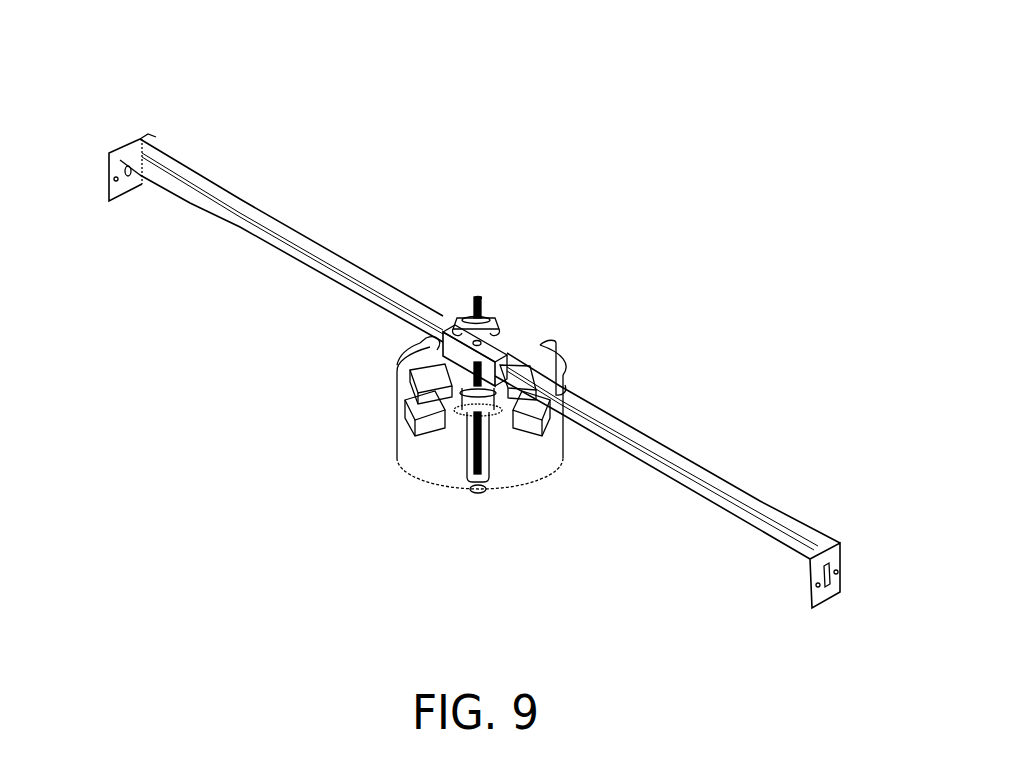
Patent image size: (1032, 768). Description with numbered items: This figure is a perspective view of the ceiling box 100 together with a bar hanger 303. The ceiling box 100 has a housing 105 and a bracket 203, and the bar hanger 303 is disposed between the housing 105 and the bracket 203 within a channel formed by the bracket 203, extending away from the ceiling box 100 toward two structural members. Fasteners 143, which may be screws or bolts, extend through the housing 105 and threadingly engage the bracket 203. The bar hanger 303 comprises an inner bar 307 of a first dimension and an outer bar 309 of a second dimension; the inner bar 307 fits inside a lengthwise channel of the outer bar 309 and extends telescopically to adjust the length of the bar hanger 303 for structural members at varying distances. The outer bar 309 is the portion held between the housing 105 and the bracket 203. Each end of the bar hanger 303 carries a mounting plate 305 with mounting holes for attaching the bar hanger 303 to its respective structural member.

The ceiling box 100 is at (123, 60).
The housing 105 is at (396, 423).
The fastener 143 is at (503, 323).
The bracket 203 is at (488, 318).
The bar hanger 303 is at (320, 243).
The mounting plate 305 is at (845, 547).
The inner bar 307 is at (108, 184).
The outer bar 309 is at (365, 272).